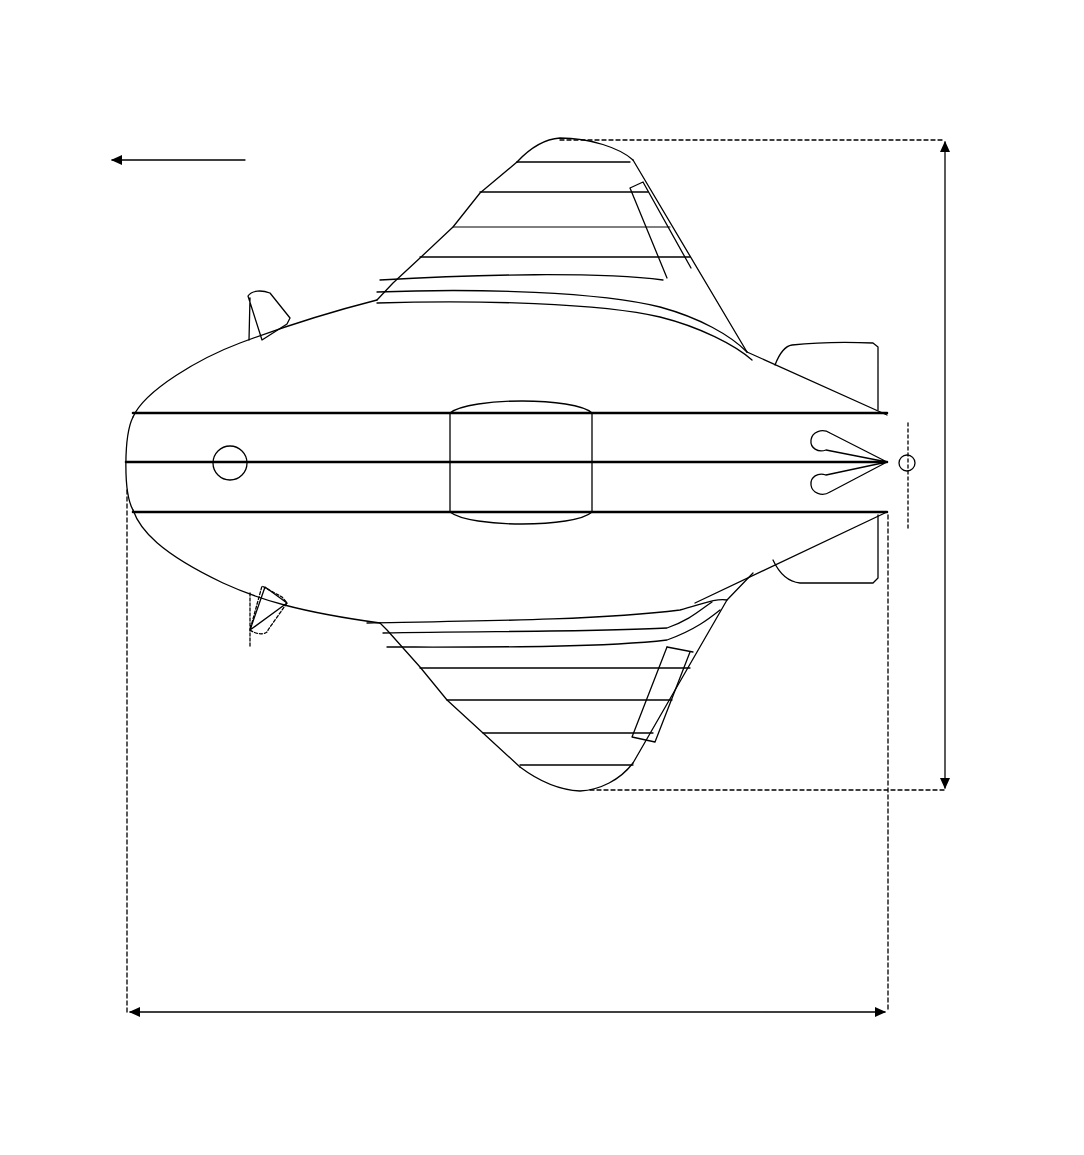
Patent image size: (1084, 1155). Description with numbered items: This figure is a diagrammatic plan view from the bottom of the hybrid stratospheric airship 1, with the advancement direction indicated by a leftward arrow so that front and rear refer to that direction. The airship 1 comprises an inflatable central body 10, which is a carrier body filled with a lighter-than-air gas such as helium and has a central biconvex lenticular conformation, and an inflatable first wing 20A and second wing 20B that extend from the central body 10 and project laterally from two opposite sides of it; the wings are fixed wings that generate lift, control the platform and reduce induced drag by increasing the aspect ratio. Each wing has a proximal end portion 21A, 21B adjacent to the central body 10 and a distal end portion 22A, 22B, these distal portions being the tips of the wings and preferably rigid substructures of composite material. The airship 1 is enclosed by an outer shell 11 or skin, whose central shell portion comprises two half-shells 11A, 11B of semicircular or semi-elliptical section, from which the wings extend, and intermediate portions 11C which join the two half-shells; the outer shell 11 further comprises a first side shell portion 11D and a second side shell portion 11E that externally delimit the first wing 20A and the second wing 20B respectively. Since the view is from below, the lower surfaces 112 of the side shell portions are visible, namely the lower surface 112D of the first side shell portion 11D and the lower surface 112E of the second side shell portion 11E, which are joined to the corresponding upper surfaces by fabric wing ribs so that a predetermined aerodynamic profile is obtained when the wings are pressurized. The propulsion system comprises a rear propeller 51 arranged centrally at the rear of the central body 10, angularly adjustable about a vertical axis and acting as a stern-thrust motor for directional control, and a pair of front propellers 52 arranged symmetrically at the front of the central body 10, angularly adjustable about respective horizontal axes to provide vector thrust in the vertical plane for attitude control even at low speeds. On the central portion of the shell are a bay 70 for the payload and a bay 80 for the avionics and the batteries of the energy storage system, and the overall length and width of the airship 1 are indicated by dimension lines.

The stratospheric airship 1 is at (499, 97).
The central body 10 is at (735, 376).
The outer shell 11 is at (289, 538).
The half-shell 11A is at (373, 340).
The half-shell 11B is at (365, 587).
The intermediate portion 11C is at (168, 445).
The first side shell portion 11D is at (580, 737).
The second side shell portion 11E is at (514, 190).
The lower surface 112 is at (333, 558).
The lower surface of first side shell portion 112D is at (532, 706).
The lower surface of second side shell portion 112E is at (602, 237).
The first wing 20A is at (505, 795).
The second wing 20B is at (486, 139).
The proximal end portion 21A is at (594, 643).
The proximal end portion 21B is at (656, 290).
The distal end portion 22A is at (589, 794).
The distal end portion 22B is at (561, 138).
The rear propeller 51 is at (893, 453).
The front propellers 52 is at (250, 298).
The payload bay 70 is at (227, 465).
The avionics bay 80 is at (500, 465).